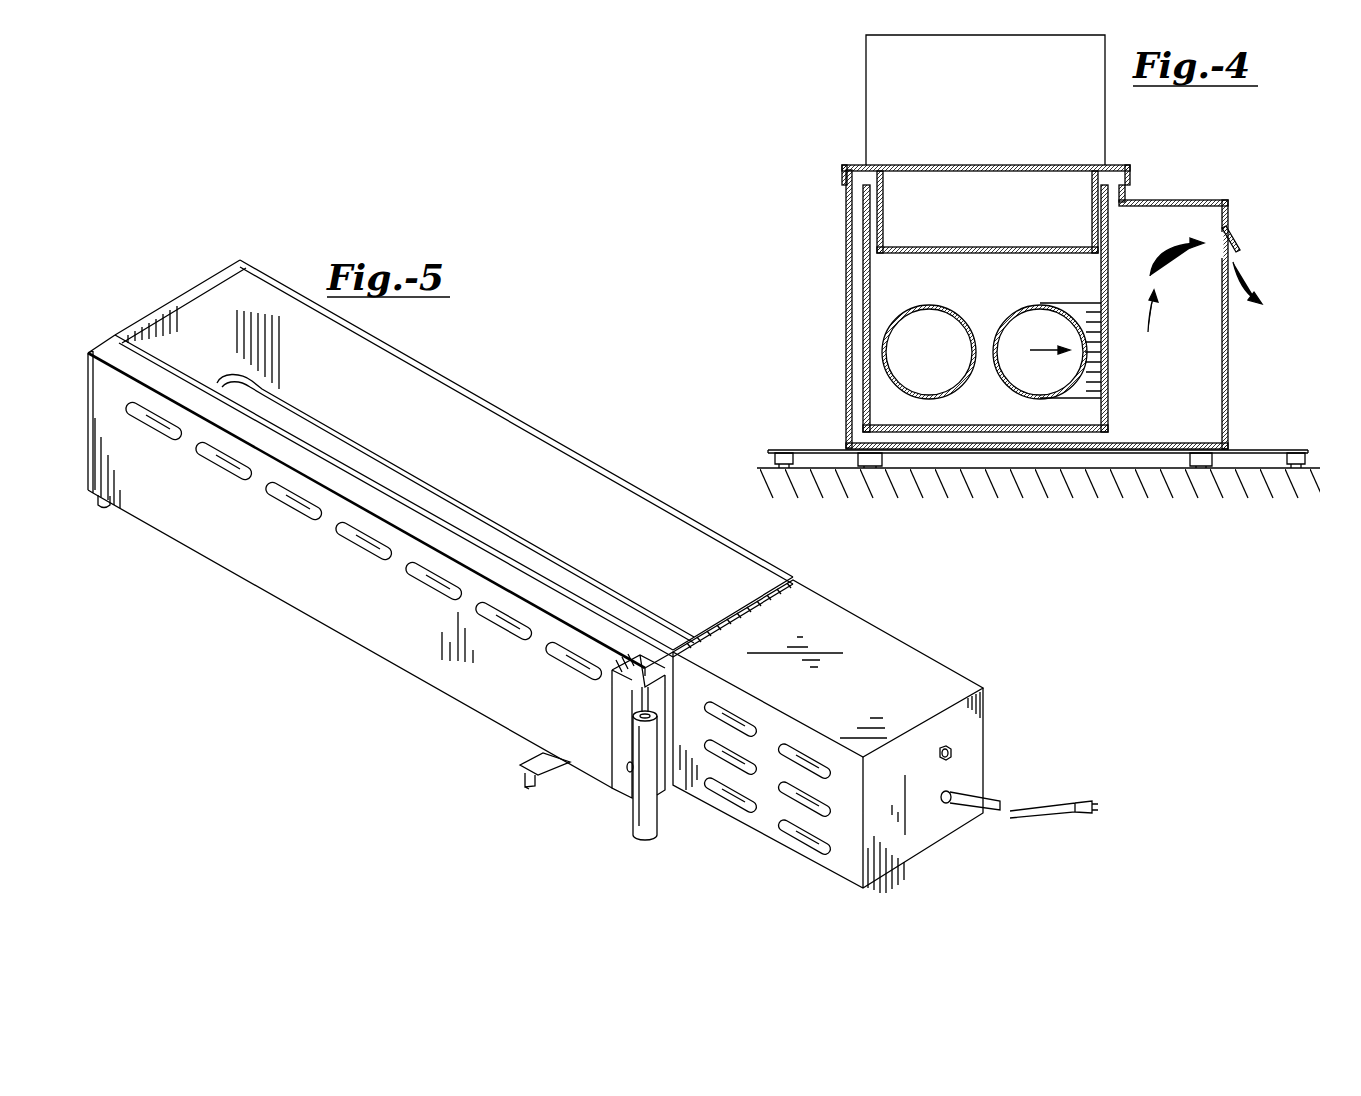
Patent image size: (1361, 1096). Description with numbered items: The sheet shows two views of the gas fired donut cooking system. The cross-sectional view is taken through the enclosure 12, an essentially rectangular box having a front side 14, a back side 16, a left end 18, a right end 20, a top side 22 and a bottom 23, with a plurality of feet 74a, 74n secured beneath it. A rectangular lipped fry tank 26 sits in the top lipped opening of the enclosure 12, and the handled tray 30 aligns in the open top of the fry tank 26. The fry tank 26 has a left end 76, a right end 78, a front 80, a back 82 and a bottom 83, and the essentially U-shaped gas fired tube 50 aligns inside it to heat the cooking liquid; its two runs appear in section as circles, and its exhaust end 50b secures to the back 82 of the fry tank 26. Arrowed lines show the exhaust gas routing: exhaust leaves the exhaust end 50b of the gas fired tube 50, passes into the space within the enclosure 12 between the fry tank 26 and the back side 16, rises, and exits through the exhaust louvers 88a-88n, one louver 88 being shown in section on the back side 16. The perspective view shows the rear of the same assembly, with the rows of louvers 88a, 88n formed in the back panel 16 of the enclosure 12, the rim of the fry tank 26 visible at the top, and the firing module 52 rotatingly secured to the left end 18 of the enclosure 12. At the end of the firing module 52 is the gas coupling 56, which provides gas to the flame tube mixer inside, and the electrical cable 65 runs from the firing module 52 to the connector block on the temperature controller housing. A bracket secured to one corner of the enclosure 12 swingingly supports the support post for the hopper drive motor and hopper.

In FIG. 4, the enclosure 12 is at (1228, 380).
In FIG. 5, the enclosure 12 is at (415, 653).
In FIG. 5, the front side 14 is at (660, 498).
In FIG. 4, the back side 16 is at (1228, 418).
In FIG. 5, the back side 16 is at (355, 612).
In FIG. 4, the left end 18 is at (856, 350).
In FIG. 5, the left end 18 is at (672, 782).
In FIG. 5, the right end 20 is at (88, 352).
In FIG. 4, the top side 22 is at (1203, 200).
In FIG. 5, the top side 22 is at (278, 448).
In FIG. 4, the bottom 23 is at (1134, 443).
In FIG. 4, the fry tank 26 is at (1110, 240).
In FIG. 5, the fry tank 26 is at (527, 422).
In FIG. 4, the handled tray 30 is at (973, 247).
In FIG. 4, the gas fired tube 50 is at (926, 308).
In FIG. 4, the exhaust end 50b is at (1106, 414).
In FIG. 5, the firing module 52 is at (812, 597).
In FIG. 5, the gas coupling 56 is at (955, 757).
In FIG. 5, the electrical cable 65 is at (1028, 808).
In FIG. 4, the foot 74a is at (776, 456).
In FIG. 4, the foot 74n is at (1306, 462).
In FIG. 4, the left end 76 is at (876, 282).
In FIG. 5, the left end 76 is at (735, 607).
In FIG. 5, the right end 78 is at (190, 313).
In FIG. 5, the front 80 is at (570, 470).
In FIG. 4, the back 82 is at (1110, 282).
In FIG. 5, the back 82 is at (513, 550).
In FIG. 4, the bottom 83 is at (1010, 433).
In FIG. 4, the louver 88 is at (862, 312).
In FIG. 5, the louver 88a is at (578, 662).
In FIG. 5, the louver 88n is at (142, 414).
In FIG. 4, the louvers 88a-88n is at (1238, 252).